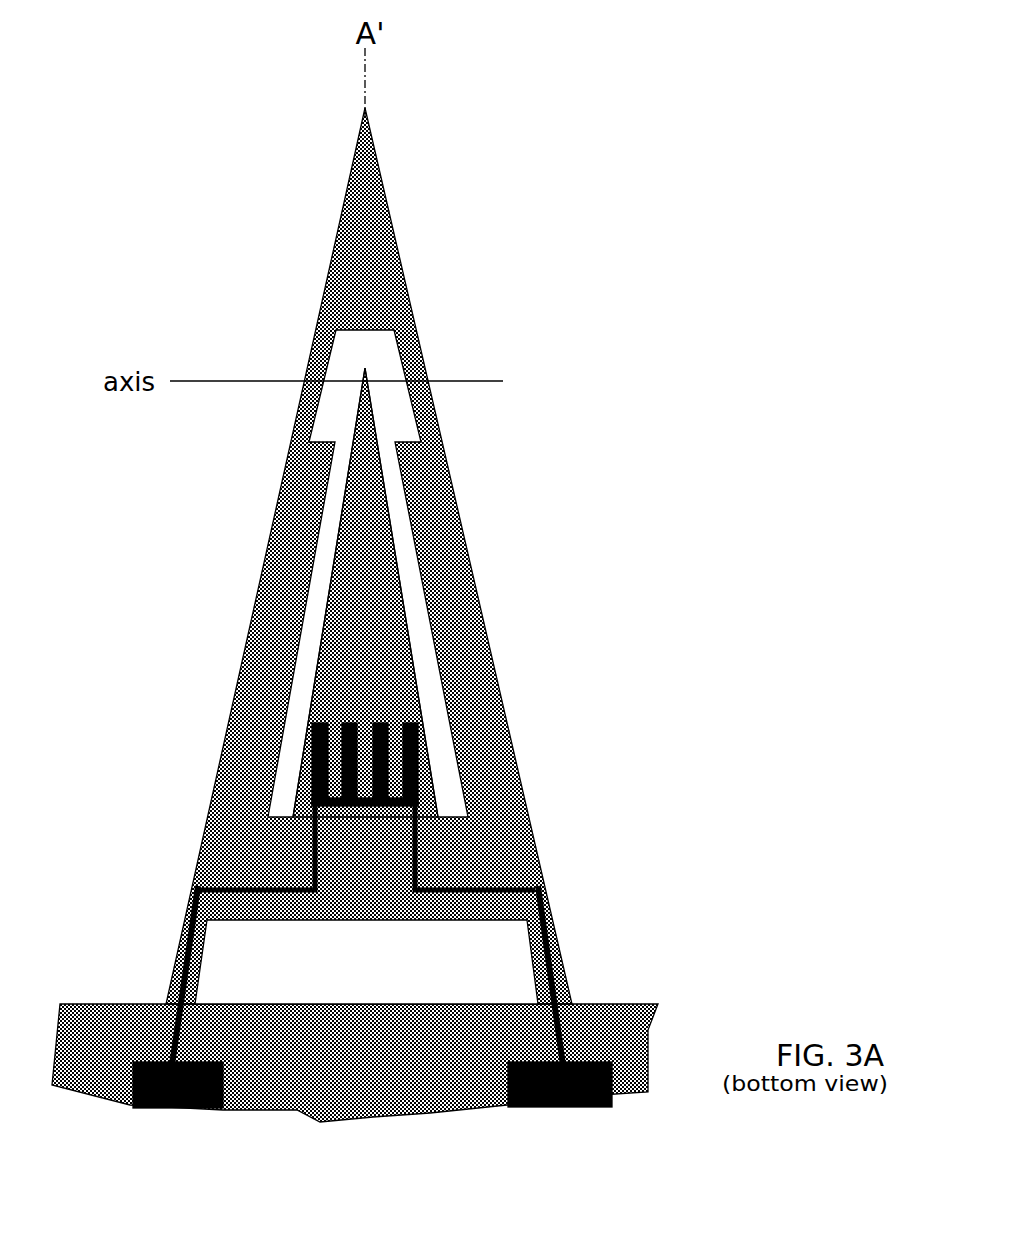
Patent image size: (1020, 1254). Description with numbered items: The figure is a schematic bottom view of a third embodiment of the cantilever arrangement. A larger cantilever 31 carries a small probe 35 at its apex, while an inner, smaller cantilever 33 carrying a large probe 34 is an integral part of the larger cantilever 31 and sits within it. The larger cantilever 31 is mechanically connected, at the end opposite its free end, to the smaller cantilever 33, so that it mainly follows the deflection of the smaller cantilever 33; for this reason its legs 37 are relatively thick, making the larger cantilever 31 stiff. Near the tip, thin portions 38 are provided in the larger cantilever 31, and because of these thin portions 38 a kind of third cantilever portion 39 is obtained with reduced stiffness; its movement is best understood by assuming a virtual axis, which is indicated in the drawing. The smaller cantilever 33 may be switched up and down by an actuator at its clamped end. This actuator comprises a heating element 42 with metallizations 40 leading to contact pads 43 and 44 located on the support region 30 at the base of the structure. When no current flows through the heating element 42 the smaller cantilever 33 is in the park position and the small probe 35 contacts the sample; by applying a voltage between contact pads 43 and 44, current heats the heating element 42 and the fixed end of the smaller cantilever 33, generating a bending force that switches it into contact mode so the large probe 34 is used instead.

The substrate base 30 is at (620, 1020).
The larger cantilever 31 is at (273, 483).
The smaller cantilever 33 is at (347, 667).
The large probe 34 is at (372, 409).
The small probe 35 is at (352, 162).
The legs 37 is at (480, 683).
The thin portions 38 is at (307, 353).
The third cantilever portion 39 is at (510, 110).
The metallizations 40 is at (198, 886).
The heating element 42 is at (445, 748).
The contact pad 43 is at (178, 1110).
The contact pad 44 is at (545, 1105).